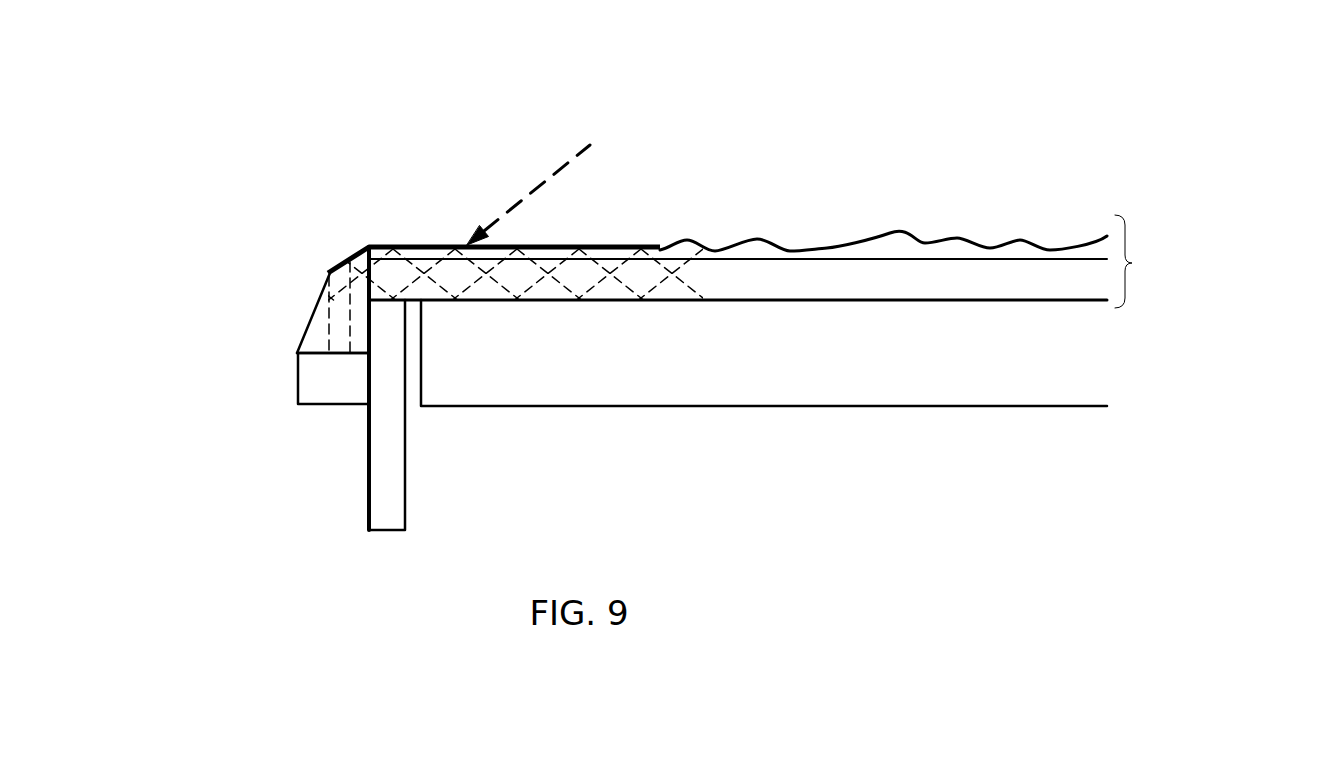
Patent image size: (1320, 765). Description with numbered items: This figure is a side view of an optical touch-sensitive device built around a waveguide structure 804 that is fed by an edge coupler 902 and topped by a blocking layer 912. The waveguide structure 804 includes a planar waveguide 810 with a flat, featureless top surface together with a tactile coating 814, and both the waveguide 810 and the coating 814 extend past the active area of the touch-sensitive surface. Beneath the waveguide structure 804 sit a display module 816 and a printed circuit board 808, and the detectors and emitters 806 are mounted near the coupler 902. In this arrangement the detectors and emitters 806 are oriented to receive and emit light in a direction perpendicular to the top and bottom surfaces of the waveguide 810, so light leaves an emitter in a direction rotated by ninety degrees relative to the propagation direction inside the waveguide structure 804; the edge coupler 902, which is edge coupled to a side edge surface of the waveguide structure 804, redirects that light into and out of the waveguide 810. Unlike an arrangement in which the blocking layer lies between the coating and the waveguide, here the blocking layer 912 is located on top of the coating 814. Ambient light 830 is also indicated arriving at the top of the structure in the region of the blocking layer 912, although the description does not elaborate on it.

The waveguide structure 804 is at (1187, 261).
The detectors and emitters 806 is at (298, 387).
The printed circuit board (PCB) 808 is at (387, 388).
The planar waveguide 810 is at (687, 274).
The tactile coating 814 is at (827, 247).
The display module 816 is at (764, 353).
The ambient light 830 is at (548, 178).
The edge coupler 902 is at (308, 310).
The blocking layer 912 is at (405, 245).